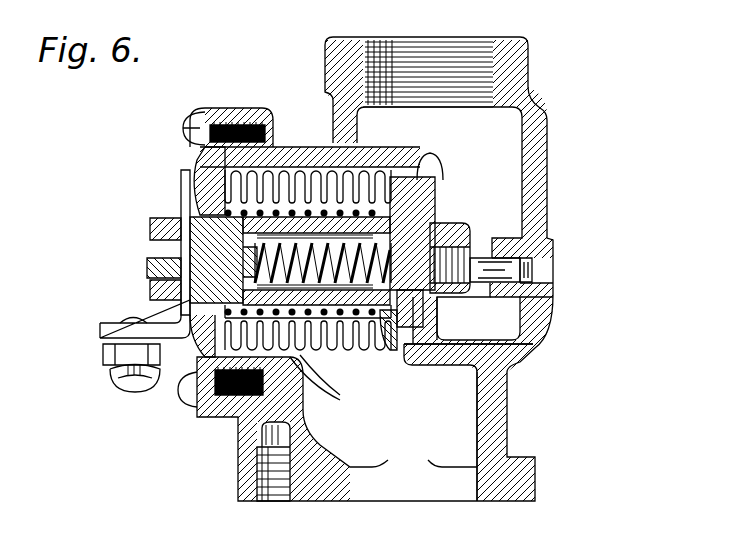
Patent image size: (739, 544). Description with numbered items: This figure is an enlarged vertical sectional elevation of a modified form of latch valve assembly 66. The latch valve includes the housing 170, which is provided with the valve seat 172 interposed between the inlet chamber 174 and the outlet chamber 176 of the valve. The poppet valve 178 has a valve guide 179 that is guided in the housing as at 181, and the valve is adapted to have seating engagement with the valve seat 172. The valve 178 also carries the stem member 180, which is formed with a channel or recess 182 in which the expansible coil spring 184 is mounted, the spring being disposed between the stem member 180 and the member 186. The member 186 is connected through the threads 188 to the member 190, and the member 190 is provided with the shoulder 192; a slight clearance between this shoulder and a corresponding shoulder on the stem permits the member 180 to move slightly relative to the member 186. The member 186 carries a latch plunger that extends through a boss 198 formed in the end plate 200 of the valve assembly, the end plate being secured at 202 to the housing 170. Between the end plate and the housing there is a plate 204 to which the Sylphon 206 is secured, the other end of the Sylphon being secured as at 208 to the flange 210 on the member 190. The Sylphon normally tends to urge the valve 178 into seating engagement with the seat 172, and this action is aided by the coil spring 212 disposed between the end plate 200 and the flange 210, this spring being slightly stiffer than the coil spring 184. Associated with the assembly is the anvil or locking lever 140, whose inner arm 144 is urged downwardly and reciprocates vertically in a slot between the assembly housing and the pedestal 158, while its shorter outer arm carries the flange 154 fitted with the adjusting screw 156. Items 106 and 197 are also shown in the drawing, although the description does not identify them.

The latch valve assembly 66 is at (547, 190).
The plate 106 is at (187, 230).
The anvil or locking lever 140 is at (158, 315).
The inner arm 144 is at (183, 175).
The flange 154 is at (100, 330).
The adjusting screw 156 is at (115, 378).
The pedestal 158 is at (150, 228).
The housing 170 is at (543, 312).
The valve seat 172 is at (430, 327).
The inlet chamber 174 is at (480, 442).
The outlet chamber 176 is at (545, 117).
The poppet valve 178 is at (440, 185).
The valve guide 179 is at (500, 267).
The stem member 180 is at (400, 290).
The guide location 181 is at (552, 267).
The channel or recess 182 is at (430, 258).
The expansible coil spring 184 is at (397, 213).
The member 186 is at (200, 165).
The threads 188 is at (300, 355).
The member 190 is at (348, 350).
The shoulder 192 is at (305, 375).
The spring housing 197 is at (270, 213).
The boss 198 is at (195, 235).
The end plate 200 is at (197, 375).
The securing means 202 is at (190, 400).
The plate 204 is at (214, 410).
The Sylphon 206 is at (400, 360).
The Sylphon attachment 208 is at (405, 345).
The flange 210 is at (533, 344).
The coil spring 212 is at (347, 213).